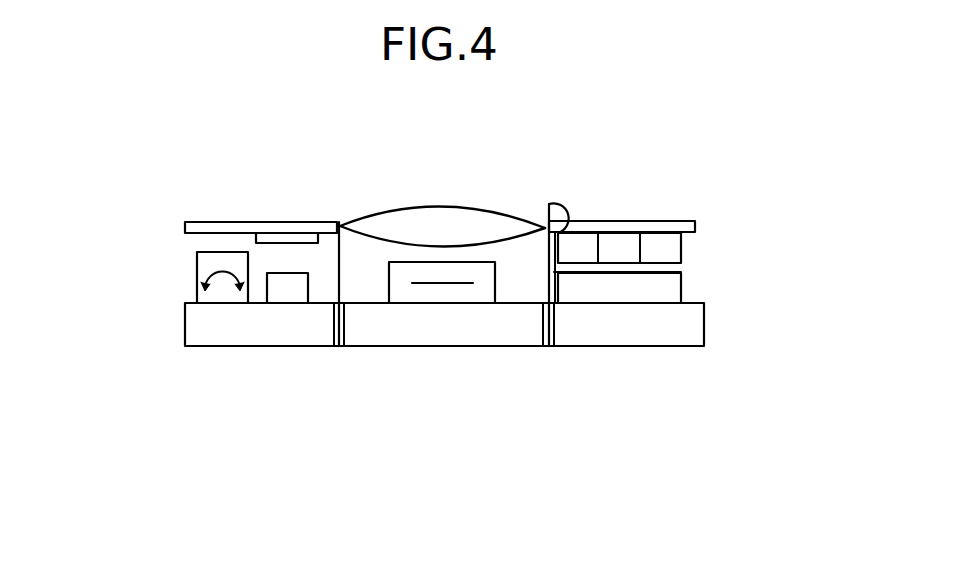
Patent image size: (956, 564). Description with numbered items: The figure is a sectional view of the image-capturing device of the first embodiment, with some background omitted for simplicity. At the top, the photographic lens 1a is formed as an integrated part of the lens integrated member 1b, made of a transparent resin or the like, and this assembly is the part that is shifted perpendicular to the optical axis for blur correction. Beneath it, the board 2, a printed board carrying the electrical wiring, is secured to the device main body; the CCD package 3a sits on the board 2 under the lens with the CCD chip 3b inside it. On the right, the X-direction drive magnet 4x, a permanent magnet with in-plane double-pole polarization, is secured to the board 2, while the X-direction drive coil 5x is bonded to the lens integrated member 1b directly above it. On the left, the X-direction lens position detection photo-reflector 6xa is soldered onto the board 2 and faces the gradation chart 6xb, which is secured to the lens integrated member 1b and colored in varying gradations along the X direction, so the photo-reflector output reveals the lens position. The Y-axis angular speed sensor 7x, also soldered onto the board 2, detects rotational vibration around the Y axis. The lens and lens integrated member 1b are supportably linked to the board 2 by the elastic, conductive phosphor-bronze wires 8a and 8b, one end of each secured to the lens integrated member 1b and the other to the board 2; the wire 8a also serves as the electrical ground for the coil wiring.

The photographic lens 1a is at (462, 212).
The lens integrated member 1b is at (680, 222).
The board 2 is at (687, 338).
The CCD package 3a is at (405, 295).
The CCD chip 3b is at (438, 287).
The X-direction drive magnet 4x is at (673, 285).
The X-direction drive coil 5x is at (677, 253).
The X-direction lens position detection photo-reflector 6xa is at (283, 297).
The gradation chart 6xb is at (277, 238).
The Y-axis angular speed sensor 7x is at (197, 296).
The wire 8a is at (540, 275).
The wire 8b is at (338, 285).